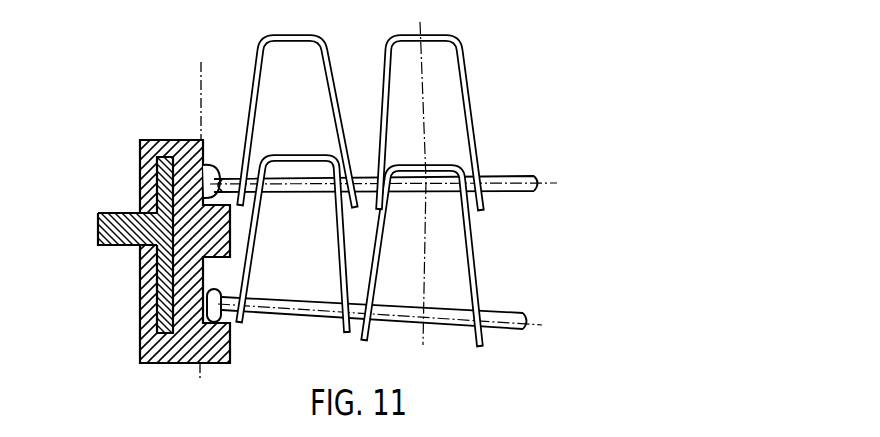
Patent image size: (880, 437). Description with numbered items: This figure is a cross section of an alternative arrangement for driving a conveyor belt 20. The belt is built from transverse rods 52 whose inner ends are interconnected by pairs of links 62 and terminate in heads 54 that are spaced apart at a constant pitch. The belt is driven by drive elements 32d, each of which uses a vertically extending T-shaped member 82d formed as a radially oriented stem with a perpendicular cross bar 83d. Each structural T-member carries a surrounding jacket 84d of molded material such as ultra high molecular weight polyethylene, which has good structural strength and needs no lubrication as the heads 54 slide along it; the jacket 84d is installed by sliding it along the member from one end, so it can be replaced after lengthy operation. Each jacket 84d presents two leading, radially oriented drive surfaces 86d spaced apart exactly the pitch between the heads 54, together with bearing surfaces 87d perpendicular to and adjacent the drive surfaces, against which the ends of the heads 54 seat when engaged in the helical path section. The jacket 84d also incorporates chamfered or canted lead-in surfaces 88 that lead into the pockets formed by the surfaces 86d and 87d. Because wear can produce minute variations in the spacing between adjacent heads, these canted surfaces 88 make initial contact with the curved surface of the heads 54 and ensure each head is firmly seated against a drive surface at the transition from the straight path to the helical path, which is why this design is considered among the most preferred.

The conveyor belt 20 is at (391, 176).
The rods 52 is at (505, 175).
The heads 54 is at (216, 177).
The links 62 is at (380, 72).
The drive elements 32d is at (164, 222).
The T-shaped members 82d is at (118, 213).
The cross bar 83d is at (140, 286).
The jacket 84d is at (140, 328).
The drive surfaces 86d is at (232, 178).
The bearing surfaces 87d is at (207, 164).
The canted lead-in surfaces 88 is at (229, 338).